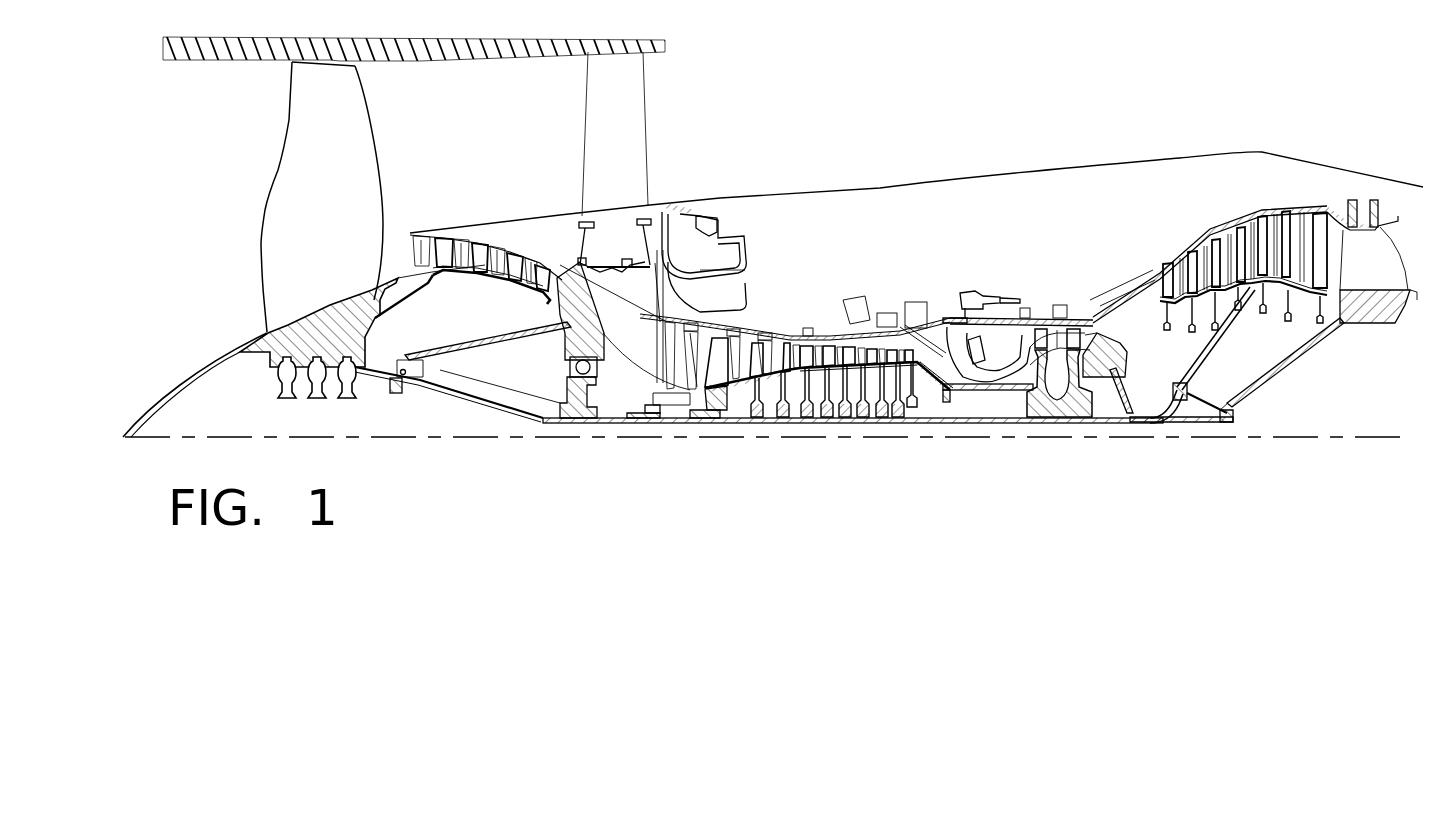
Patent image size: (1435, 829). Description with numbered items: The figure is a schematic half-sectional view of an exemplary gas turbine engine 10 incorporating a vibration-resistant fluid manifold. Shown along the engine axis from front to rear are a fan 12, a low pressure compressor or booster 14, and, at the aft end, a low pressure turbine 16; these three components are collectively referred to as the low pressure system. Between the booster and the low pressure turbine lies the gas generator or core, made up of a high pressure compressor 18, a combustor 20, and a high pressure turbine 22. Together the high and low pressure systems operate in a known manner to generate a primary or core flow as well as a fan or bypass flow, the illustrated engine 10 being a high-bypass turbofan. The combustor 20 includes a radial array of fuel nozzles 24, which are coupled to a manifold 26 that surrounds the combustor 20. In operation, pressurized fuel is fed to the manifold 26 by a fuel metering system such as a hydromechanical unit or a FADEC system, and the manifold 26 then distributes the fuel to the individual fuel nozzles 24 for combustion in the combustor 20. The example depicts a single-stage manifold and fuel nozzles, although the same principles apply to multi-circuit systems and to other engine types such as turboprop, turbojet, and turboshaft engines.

The gas turbine engine 10 is at (905, 55).
The fan 12 is at (344, 129).
The low pressure compressor or booster 14 is at (463, 242).
The low pressure turbine 16 is at (1250, 223).
The high pressure compressor 18 is at (753, 348).
The combustor 20 is at (1026, 330).
The high pressure turbine 22 is at (1080, 325).
The fuel nozzles 24 is at (915, 333).
The manifold 26 is at (1010, 297).